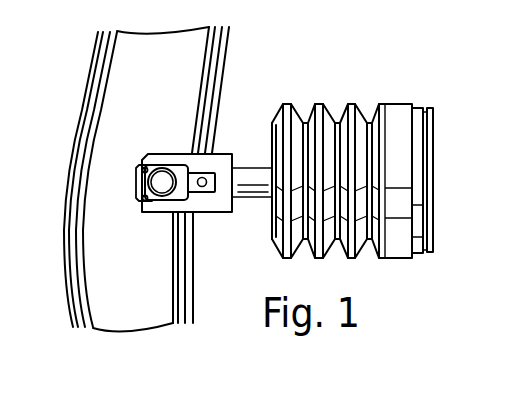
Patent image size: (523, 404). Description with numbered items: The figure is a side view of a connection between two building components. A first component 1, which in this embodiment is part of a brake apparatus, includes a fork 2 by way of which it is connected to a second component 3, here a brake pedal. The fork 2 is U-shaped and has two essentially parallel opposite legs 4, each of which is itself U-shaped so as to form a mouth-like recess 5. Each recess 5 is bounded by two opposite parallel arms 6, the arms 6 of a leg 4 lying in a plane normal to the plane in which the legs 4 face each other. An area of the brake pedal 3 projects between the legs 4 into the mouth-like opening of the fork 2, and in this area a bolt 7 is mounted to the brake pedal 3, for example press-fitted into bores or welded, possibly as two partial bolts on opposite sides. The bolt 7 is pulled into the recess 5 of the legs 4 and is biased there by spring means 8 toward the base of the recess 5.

The first component 1 is at (396, 108).
The fork 2 is at (226, 150).
The second component 3 is at (117, 72).
The legs 4 is at (198, 204).
The mouth-like recess 5 is at (141, 170).
The arms 6 is at (156, 160).
The bolt 7 is at (159, 194).
The spring means 8 is at (177, 168).